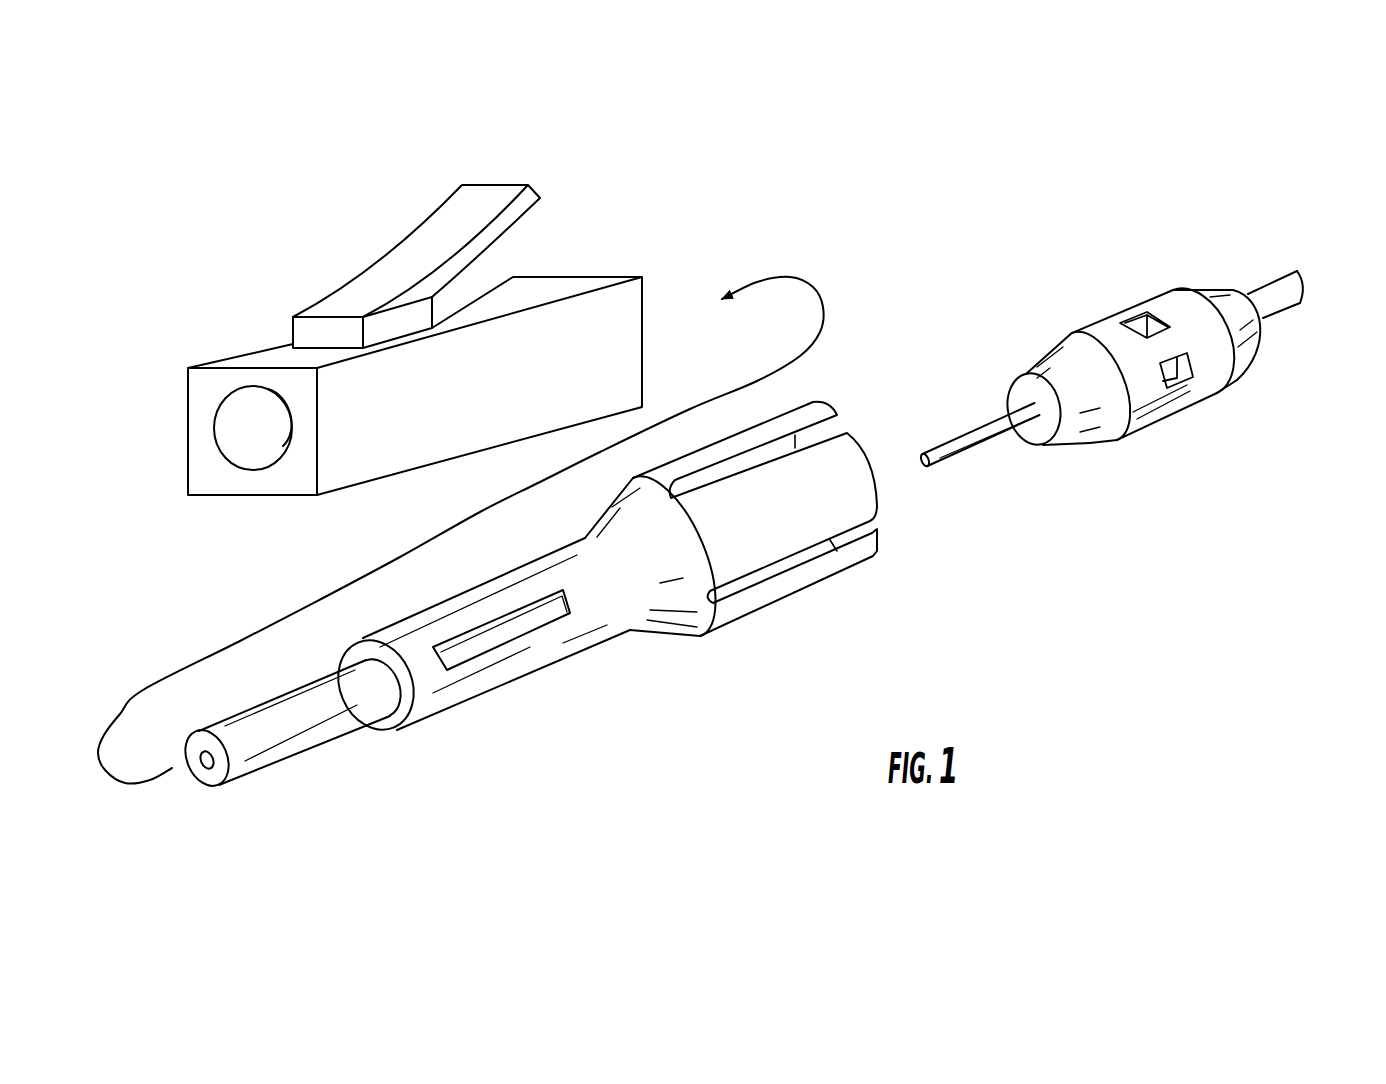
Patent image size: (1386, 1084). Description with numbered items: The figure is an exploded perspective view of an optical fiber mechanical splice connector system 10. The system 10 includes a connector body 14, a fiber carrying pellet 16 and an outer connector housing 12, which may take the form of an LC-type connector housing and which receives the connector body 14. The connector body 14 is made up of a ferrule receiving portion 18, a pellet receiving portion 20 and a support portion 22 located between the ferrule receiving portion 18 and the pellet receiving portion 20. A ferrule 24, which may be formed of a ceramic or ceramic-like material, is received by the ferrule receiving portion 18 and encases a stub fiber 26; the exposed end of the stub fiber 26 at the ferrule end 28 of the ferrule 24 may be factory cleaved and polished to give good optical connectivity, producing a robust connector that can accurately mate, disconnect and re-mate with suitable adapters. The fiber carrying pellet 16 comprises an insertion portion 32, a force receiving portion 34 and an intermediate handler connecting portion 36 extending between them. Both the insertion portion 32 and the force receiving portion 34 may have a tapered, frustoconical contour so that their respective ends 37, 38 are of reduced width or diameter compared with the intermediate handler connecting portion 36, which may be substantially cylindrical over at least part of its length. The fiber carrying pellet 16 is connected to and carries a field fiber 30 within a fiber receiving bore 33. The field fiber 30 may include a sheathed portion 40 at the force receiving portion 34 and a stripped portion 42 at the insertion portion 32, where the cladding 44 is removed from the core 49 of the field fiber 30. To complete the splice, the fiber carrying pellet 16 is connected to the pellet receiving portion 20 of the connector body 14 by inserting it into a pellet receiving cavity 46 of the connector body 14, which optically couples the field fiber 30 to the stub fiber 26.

The optical fiber mechanical splice connector system 10 is at (923, 226).
The outer connector housing 12 is at (303, 283).
The connector body 14 is at (474, 718).
The fiber carrying pellet 16 is at (1146, 265).
The ferrule receiving portion 18 is at (392, 752).
The pellet receiving portion 20 is at (852, 386).
The support portion 22 is at (668, 648).
The ferrule 24 is at (295, 728).
The stub fiber 26 is at (197, 775).
The ferrule end 28 is at (205, 735).
The field fiber 30 is at (1290, 306).
The insertion portion 32 is at (1024, 352).
The fiber receiving bore 33 is at (1063, 437).
The force receiving portion 34 is at (1213, 266).
The intermediate handler connecting portion 36 is at (1105, 298).
The end of the insertion portion 37 is at (1041, 445).
The end of the force receiving portion 38 is at (1261, 350).
The sheathed portion 40 is at (1279, 281).
The stripped portion 42 is at (952, 480).
The cladding 44 is at (1265, 318).
The pellet receiving cavity 46 is at (873, 442).
The core 49 is at (970, 433).